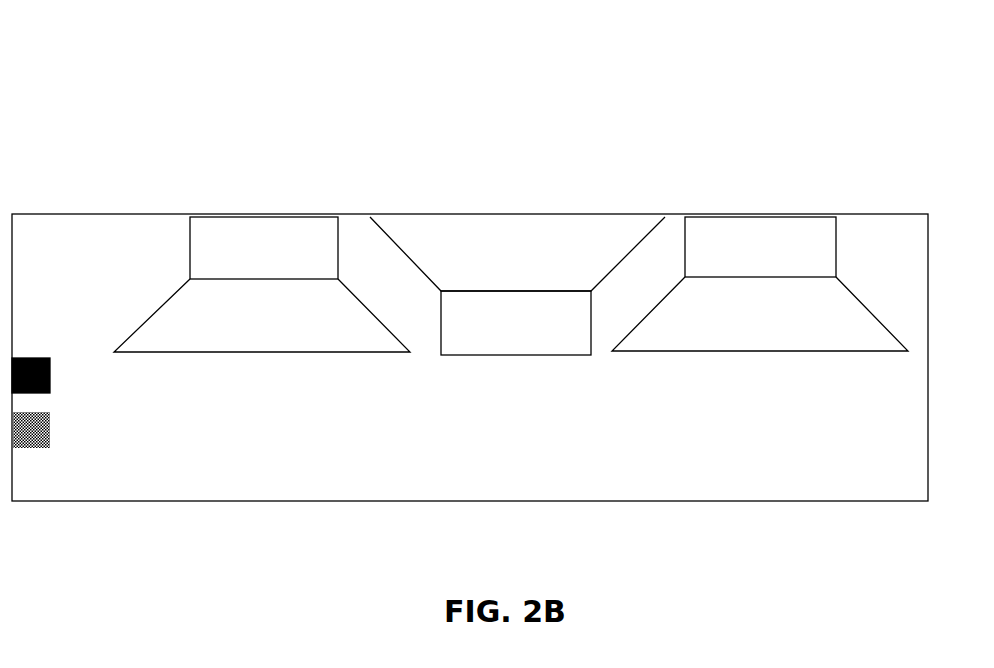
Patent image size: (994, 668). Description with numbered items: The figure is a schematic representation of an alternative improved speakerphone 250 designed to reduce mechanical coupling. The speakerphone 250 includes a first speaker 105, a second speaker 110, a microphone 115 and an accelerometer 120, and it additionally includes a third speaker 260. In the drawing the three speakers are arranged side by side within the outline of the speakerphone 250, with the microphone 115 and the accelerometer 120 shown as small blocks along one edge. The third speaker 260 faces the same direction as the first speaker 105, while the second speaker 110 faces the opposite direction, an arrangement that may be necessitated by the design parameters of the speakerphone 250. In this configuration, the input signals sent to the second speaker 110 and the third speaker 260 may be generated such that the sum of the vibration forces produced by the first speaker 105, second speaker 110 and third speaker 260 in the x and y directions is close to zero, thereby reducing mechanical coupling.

The speakerphone 250 is at (112, 61).
The first speaker 105 is at (252, 216).
The second speaker 110 is at (498, 355).
The third speaker 260 is at (748, 214).
The microphone 115 is at (31, 357).
The accelerometer 120 is at (30, 448).